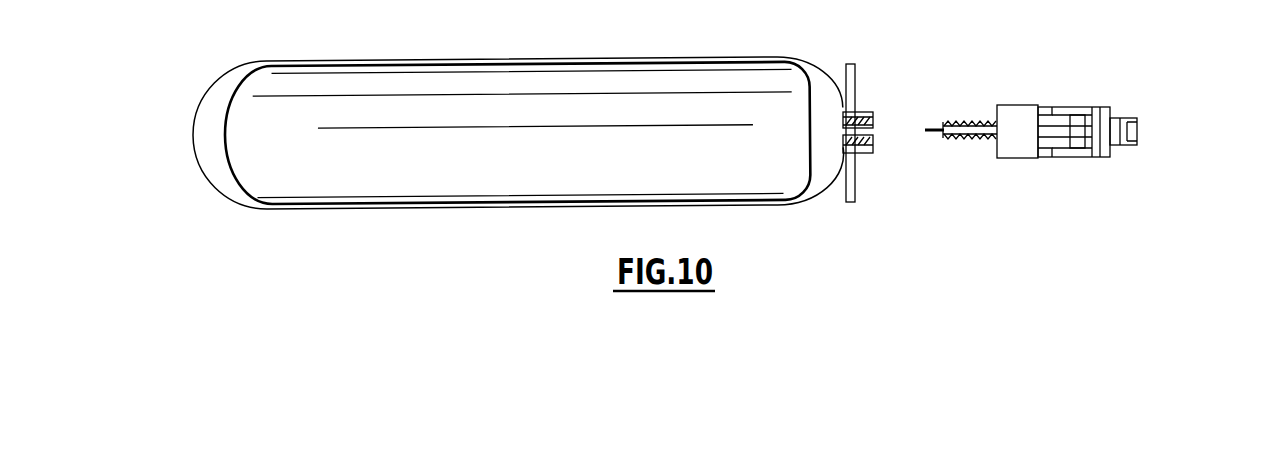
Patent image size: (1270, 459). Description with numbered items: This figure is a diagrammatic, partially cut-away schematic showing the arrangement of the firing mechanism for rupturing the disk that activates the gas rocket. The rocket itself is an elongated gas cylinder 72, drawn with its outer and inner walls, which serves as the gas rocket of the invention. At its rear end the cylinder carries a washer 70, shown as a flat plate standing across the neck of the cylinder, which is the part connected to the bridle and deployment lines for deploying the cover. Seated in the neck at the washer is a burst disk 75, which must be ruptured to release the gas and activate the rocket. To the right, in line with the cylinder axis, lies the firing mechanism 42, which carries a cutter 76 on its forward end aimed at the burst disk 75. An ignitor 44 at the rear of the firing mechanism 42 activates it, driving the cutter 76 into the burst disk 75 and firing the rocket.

The gas cylinder 72 is at (703, 207).
The washer 70 is at (856, 74).
The burst disk 75 is at (871, 133).
The cutter 76 is at (939, 127).
The firing mechanism 42 is at (968, 114).
The ignitor 44 is at (1132, 113).